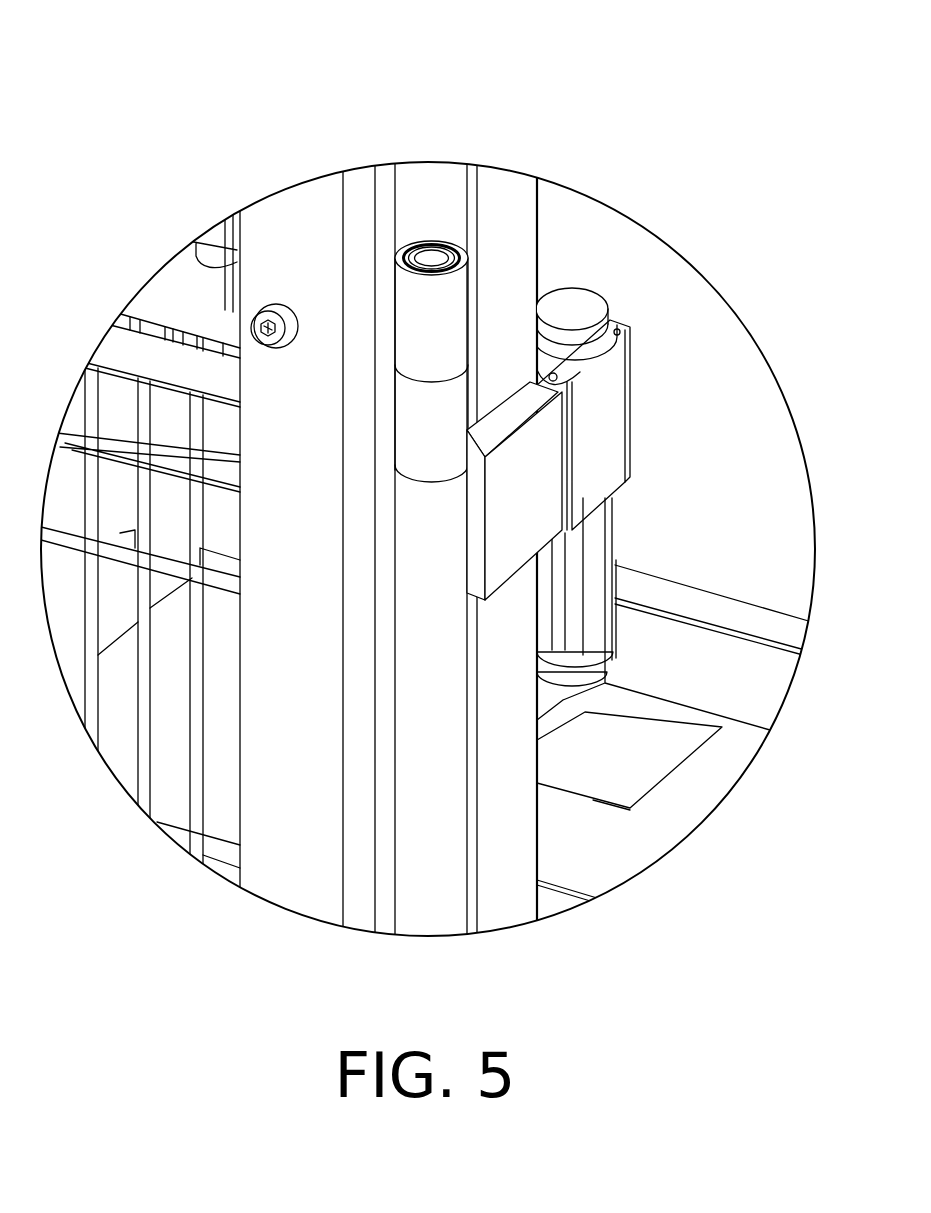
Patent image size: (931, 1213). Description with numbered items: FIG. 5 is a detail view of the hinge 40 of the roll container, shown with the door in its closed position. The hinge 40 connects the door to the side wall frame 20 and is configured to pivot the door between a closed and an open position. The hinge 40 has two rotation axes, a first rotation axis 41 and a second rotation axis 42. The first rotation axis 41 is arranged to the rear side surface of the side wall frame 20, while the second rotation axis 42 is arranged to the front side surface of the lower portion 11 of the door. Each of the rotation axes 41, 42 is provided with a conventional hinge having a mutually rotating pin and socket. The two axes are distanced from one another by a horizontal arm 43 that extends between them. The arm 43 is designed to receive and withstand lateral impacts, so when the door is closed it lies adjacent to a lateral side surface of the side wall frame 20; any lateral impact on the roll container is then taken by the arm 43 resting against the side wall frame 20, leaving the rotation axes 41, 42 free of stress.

The lower portion 11 is at (280, 242).
The side wall frame 20 is at (466, 168).
The hinge 40 is at (640, 357).
The first rotation axis 41 is at (560, 303).
The second rotation axis 42 is at (427, 258).
The horizontal arm 43 is at (528, 478).